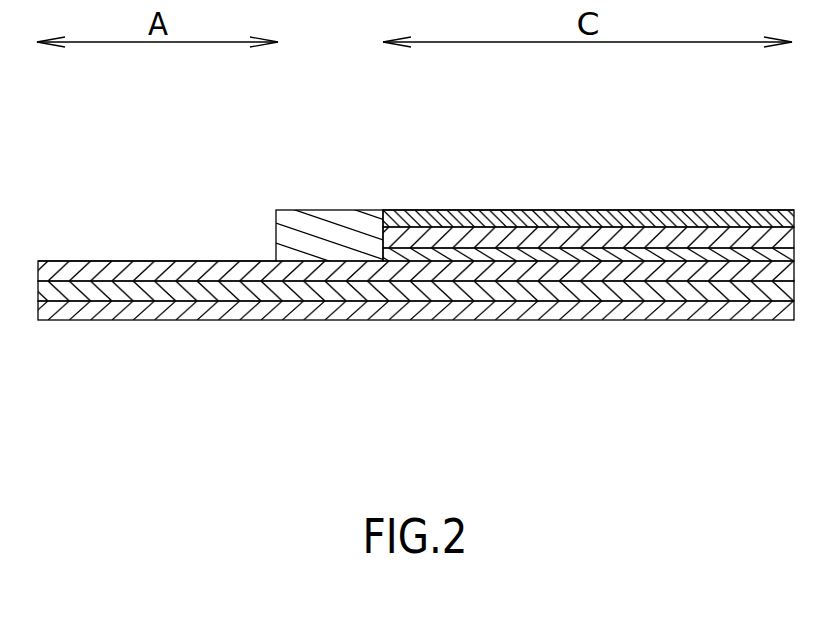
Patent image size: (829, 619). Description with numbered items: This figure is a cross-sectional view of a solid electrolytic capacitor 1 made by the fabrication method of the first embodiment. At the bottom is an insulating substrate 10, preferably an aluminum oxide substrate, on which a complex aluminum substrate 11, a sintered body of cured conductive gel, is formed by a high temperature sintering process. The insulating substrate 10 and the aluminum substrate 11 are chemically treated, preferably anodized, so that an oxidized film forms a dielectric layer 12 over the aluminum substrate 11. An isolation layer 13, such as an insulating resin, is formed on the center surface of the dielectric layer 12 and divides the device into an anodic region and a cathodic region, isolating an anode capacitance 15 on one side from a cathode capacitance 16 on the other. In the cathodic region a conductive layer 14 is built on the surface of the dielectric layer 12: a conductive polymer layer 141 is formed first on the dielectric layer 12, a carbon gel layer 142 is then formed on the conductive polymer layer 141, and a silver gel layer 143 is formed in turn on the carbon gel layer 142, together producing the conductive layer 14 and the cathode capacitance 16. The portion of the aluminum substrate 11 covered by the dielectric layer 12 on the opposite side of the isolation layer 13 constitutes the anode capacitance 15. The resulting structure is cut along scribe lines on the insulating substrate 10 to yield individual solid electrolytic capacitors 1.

The solid electrolytic capacitor 1 is at (416, 241).
The insulating substrate 10 is at (113, 310).
The aluminum substrate 11 is at (215, 290).
The dielectric layer 12 is at (175, 273).
The isolation layer 13 is at (337, 225).
The conductive layer 14 is at (588, 164).
The conductive polymer layer 141 is at (578, 122).
The carbon gel layer 142 is at (523, 238).
The silver gel layer 143 is at (582, 222).
The anode capacitance 15 is at (84, 236).
The cathode capacitance 16 is at (677, 202).